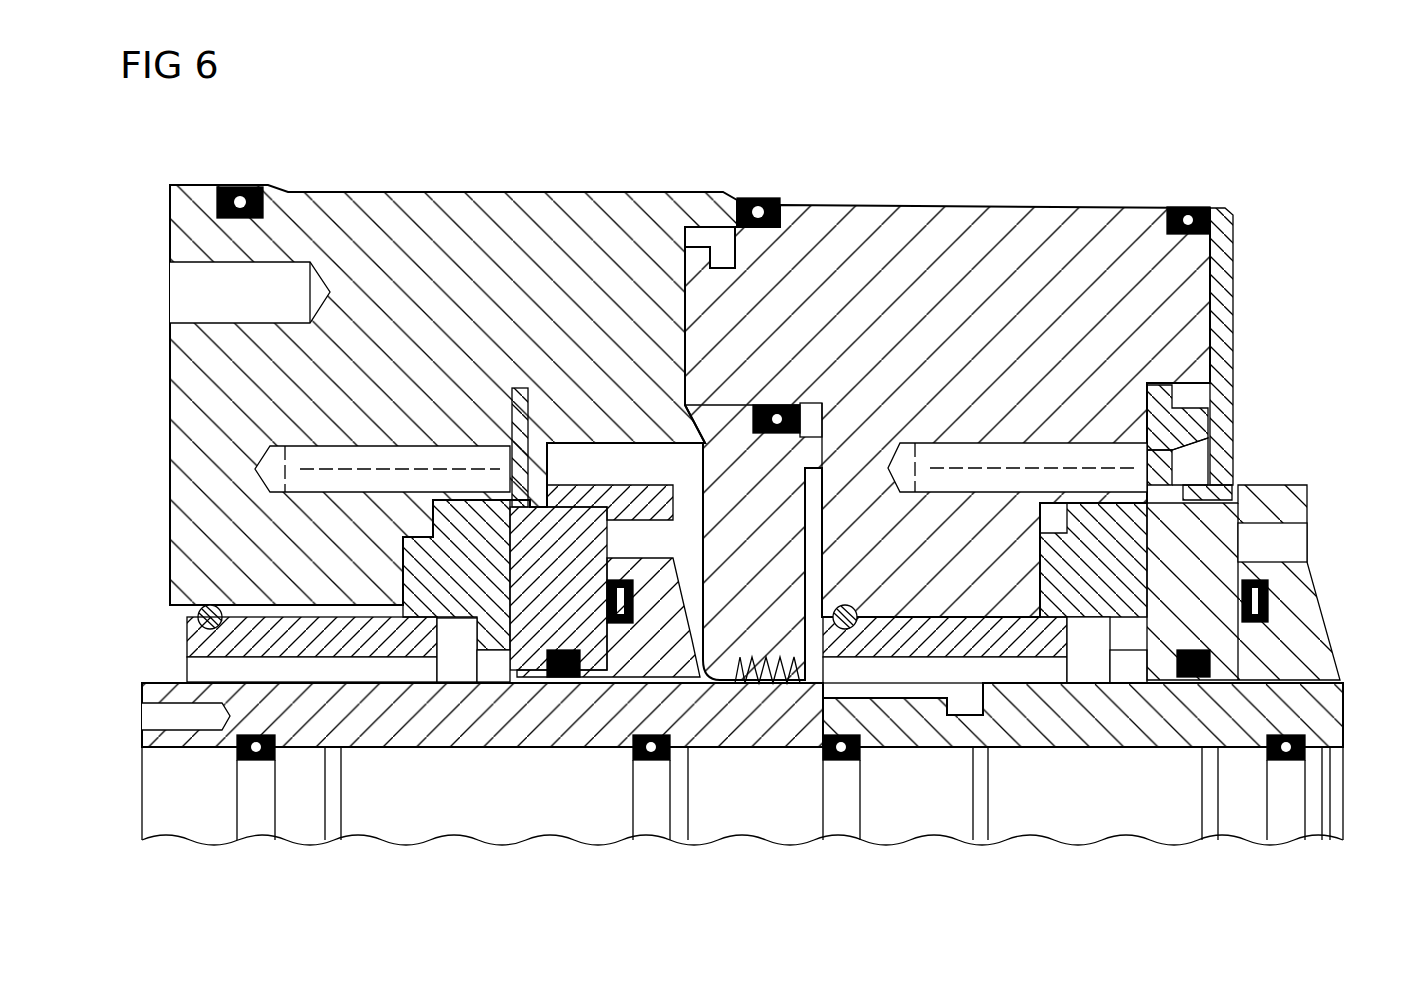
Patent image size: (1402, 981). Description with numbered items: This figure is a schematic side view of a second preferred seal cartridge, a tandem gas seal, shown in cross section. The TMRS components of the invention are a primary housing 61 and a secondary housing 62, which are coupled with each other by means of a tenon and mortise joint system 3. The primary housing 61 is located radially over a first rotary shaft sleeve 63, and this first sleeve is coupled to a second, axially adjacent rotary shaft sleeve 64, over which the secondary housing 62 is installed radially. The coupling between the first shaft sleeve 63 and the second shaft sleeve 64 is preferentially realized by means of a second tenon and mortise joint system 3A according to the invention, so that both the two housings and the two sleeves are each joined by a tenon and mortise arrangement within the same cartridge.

The primary housing 61 is at (445, 235).
The tenon and mortise joint system 3 is at (756, 248).
The secondary housing 62 is at (1035, 235).
The first rotary shaft sleeve 63 is at (385, 735).
The second rotary shaft sleeve 64 is at (1100, 742).
The second tenon and mortise joint system 3A is at (812, 720).